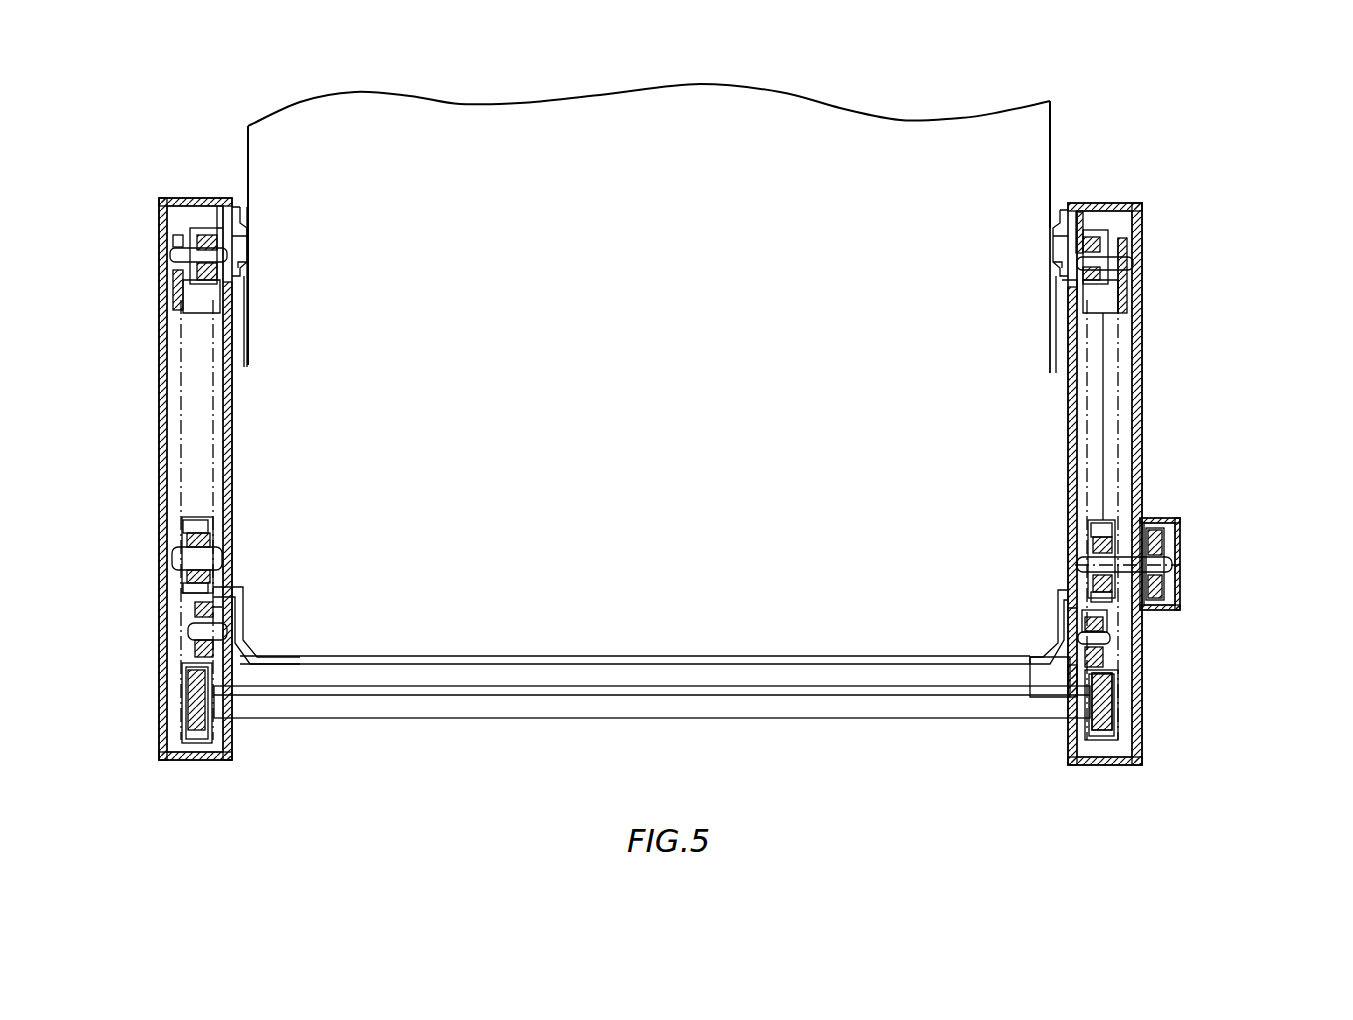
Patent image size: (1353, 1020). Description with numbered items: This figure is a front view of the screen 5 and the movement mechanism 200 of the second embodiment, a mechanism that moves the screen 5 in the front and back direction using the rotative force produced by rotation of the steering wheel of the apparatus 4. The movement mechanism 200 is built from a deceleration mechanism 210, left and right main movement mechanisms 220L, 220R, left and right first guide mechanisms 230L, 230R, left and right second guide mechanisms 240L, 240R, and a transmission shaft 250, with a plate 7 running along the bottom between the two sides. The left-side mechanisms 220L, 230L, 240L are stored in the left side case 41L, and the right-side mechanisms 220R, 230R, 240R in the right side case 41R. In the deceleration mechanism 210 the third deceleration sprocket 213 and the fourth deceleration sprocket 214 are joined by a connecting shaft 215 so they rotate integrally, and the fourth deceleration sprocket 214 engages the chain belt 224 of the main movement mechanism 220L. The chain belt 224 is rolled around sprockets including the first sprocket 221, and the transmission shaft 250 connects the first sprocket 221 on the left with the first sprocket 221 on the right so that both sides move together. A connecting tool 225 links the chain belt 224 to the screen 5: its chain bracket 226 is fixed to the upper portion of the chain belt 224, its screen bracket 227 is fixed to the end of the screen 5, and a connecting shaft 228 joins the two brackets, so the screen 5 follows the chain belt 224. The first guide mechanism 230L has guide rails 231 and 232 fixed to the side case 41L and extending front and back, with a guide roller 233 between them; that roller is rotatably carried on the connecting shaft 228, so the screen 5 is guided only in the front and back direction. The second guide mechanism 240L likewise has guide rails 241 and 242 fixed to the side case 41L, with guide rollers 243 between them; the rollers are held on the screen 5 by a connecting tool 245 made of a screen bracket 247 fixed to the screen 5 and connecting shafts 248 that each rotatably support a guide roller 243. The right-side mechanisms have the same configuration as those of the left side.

The image forming apparatus 4 is at (536, 45).
The screen 5 is at (483, 104).
The plate 7 is at (622, 662).
The side case 41R is at (202, 198).
The side case 41L is at (1108, 203).
The movement mechanism 200 is at (1101, 135).
The deceleration mechanism 210 is at (1185, 532).
The third deceleration sprocket 213 is at (1160, 578).
The fourth deceleration sprocket 214 is at (1095, 545).
The connecting shaft 215 is at (1085, 562).
The main movement mechanism 220R is at (262, 410).
The main movement mechanism 220L is at (1150, 396).
The first sprocket 221 is at (213, 728).
The chain belt 224 is at (1125, 435).
The connecting tool 225 is at (1150, 277).
The chain bracket 226 is at (1118, 300).
The screen bracket 227 is at (1055, 334).
The connecting shaft 228 is at (1120, 264).
The first guide mechanism 230R is at (262, 247).
The first guide mechanism 230L is at (1045, 243).
The guide rail 231 is at (1085, 228).
The guide rail 232 is at (1062, 290).
The guide roller 233 is at (1100, 240).
The second guide mechanism 240R is at (258, 602).
The second guide mechanism 240L is at (1045, 616).
The guide rail 241 is at (1092, 584).
The guide rail 242 is at (1110, 655).
The guide roller 243 is at (1105, 690).
The connecting tool 245 is at (1045, 645).
The screen bracket 247 is at (1028, 665).
The connecting shaft 248 is at (1112, 642).
The transmission shaft 250 is at (596, 718).